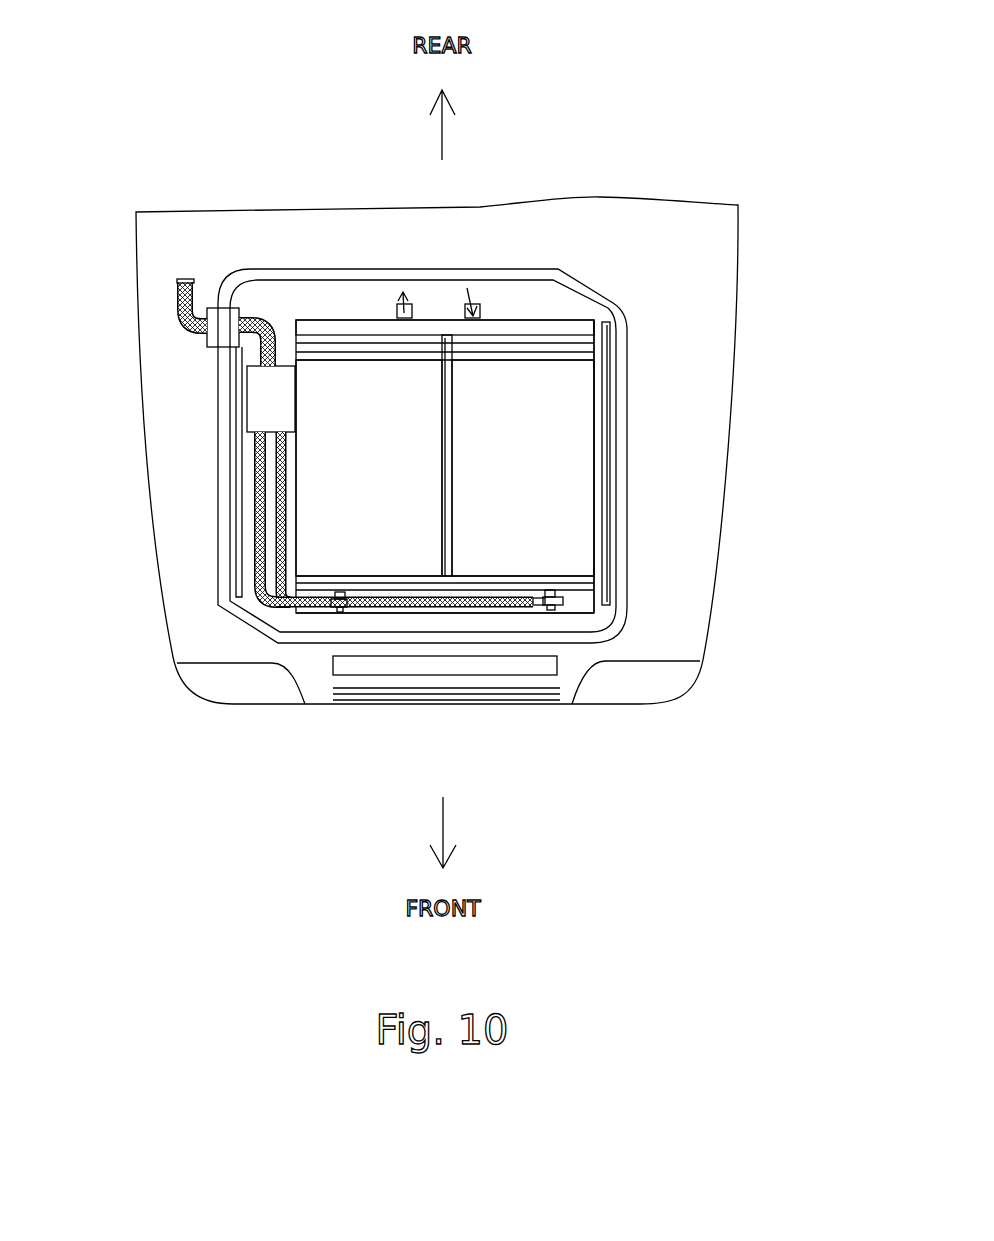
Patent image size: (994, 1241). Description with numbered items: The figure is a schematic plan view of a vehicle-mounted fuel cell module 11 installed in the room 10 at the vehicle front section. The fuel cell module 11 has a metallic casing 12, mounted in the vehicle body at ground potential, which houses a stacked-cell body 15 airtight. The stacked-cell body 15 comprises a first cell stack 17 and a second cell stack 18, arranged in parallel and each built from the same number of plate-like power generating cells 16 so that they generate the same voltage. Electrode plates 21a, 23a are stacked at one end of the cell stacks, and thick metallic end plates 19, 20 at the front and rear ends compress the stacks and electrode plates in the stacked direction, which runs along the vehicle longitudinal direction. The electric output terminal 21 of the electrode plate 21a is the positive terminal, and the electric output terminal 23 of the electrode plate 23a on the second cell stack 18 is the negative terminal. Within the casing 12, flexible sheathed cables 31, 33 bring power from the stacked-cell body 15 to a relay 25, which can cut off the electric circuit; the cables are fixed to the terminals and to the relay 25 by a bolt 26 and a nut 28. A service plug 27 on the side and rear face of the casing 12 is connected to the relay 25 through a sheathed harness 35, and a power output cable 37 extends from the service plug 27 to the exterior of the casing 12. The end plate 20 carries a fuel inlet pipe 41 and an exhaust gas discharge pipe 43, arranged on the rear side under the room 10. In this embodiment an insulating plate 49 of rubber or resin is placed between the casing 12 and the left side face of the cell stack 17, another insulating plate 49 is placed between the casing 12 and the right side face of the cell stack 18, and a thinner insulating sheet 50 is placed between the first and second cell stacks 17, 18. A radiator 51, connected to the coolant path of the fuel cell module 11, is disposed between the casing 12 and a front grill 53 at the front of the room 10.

The room at the vehicle front section 10 is at (754, 306).
The fuel cell module 11 is at (590, 257).
The casing 12 is at (523, 269).
The stacked-cell body 15 is at (582, 458).
The power generating cells 16 is at (572, 353).
The first cell stack 17 is at (373, 457).
The second cell stack 18 is at (520, 487).
The end plate 19 is at (593, 604).
The end plate 20 is at (587, 325).
The electric output terminal 21 is at (330, 615).
The electrode plate 21a is at (380, 597).
The electric output terminal 23 is at (556, 610).
The electrode plate 23a is at (596, 593).
The relay 25 is at (247, 398).
The bolt 26 is at (343, 610).
The service plug 27 is at (215, 338).
The nut 28 is at (337, 592).
The sheathed cable 31 is at (277, 478).
The sheathed cable 33 is at (234, 532).
The harness 35 is at (263, 313).
The power output cable 37 is at (180, 302).
The fuel inlet pipe 41 is at (463, 310).
The exhaust gas discharge pipe 43 is at (397, 310).
The insulating plate 49 is at (607, 508).
The insulating sheet 50 is at (448, 392).
The radiator 51 is at (418, 676).
The front grill 53 is at (492, 701).